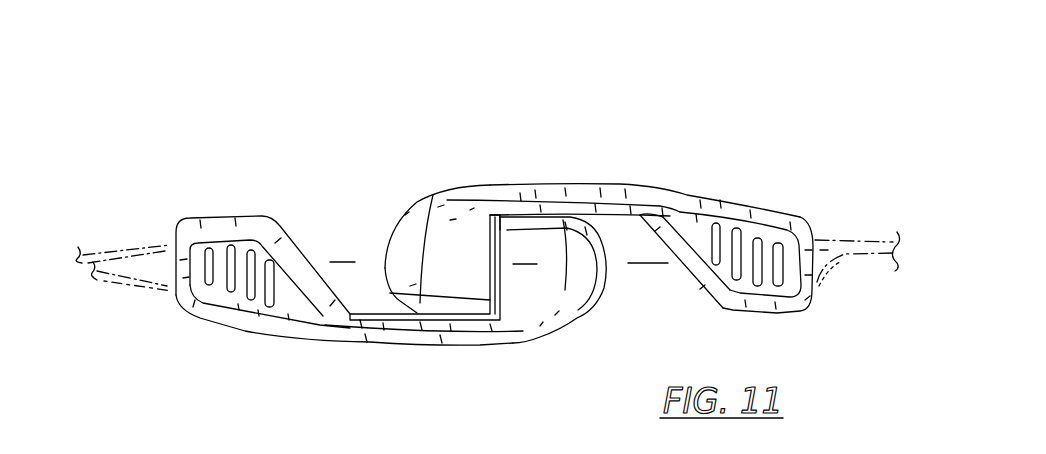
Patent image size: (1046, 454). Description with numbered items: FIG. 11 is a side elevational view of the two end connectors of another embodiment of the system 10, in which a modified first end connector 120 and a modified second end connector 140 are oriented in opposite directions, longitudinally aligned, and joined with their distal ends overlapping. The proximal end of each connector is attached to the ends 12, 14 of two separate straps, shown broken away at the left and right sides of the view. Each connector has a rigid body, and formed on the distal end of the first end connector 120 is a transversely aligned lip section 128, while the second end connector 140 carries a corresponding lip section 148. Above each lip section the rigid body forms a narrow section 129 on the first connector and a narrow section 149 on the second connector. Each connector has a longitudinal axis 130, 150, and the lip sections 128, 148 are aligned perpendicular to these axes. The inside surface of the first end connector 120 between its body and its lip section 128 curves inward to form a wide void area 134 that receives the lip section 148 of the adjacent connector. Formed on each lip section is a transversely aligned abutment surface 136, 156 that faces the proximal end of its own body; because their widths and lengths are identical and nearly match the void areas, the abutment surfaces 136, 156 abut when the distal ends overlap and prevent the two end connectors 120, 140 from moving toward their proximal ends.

The system 10 is at (303, 117).
The strap end 12 is at (833, 238).
The strap end 14 is at (128, 253).
The first end connector 120 is at (677, 182).
The lip section 128 is at (425, 207).
The narrow section 129 is at (606, 192).
The longitudinal axis 130 is at (656, 266).
The wide void area 134 is at (621, 247).
The abutment surface 136 is at (497, 275).
The second end connector 140 is at (242, 215).
The lip section 148 is at (580, 310).
The narrow section 149 is at (368, 330).
The longitudinal axis 150 is at (341, 262).
The abutment surface 156 is at (494, 232).